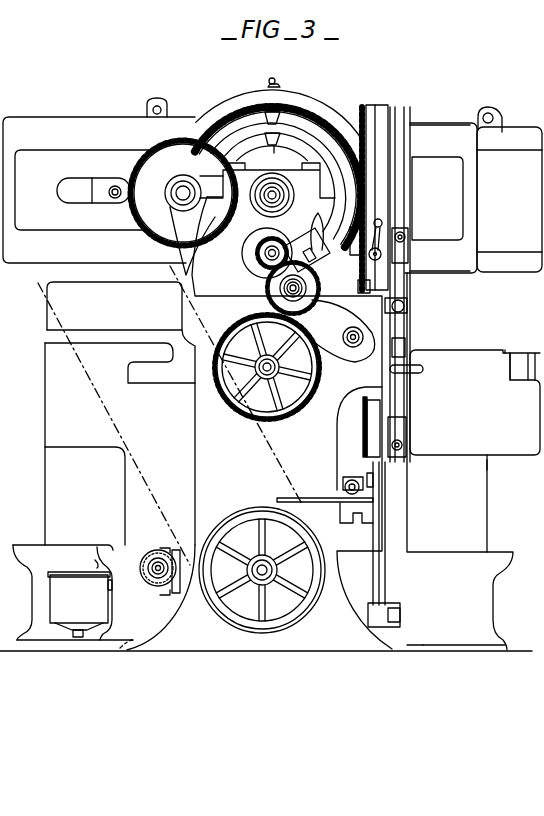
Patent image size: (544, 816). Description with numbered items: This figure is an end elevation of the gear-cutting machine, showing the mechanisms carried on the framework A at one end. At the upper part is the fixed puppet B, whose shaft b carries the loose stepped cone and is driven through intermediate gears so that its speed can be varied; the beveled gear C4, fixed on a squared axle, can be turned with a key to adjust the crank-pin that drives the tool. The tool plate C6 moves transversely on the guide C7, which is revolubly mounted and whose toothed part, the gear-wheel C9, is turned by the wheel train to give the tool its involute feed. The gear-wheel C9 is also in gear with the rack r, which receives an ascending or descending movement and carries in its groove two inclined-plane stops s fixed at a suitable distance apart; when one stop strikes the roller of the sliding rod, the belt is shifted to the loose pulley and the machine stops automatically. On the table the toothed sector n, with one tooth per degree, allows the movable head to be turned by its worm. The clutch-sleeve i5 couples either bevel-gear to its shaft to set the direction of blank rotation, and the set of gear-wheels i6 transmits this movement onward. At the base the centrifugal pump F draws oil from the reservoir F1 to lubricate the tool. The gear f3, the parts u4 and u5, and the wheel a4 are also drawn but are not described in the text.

The framework A is at (266, 374).
The gear-wheel C9 is at (295, 108).
The shaft b is at (258, 208).
The rack r is at (373, 199).
The stop s is at (386, 367).
The guide C7 is at (440, 198).
The plate C6 is at (509, 189).
The beveled gear C4 is at (475, 410).
The toothed sector n is at (523, 350).
The gear f3 is at (132, 212).
The fixed puppet B is at (192, 241).
The clutch-sleeve i5 is at (262, 258).
The set of gear-wheels i6 is at (306, 336).
The latch u4 is at (366, 427).
The bar u5 is at (325, 487).
The centrifugal pump F is at (145, 562).
The reservoir F1 is at (80, 604).
The driving wheel a4 is at (308, 613).